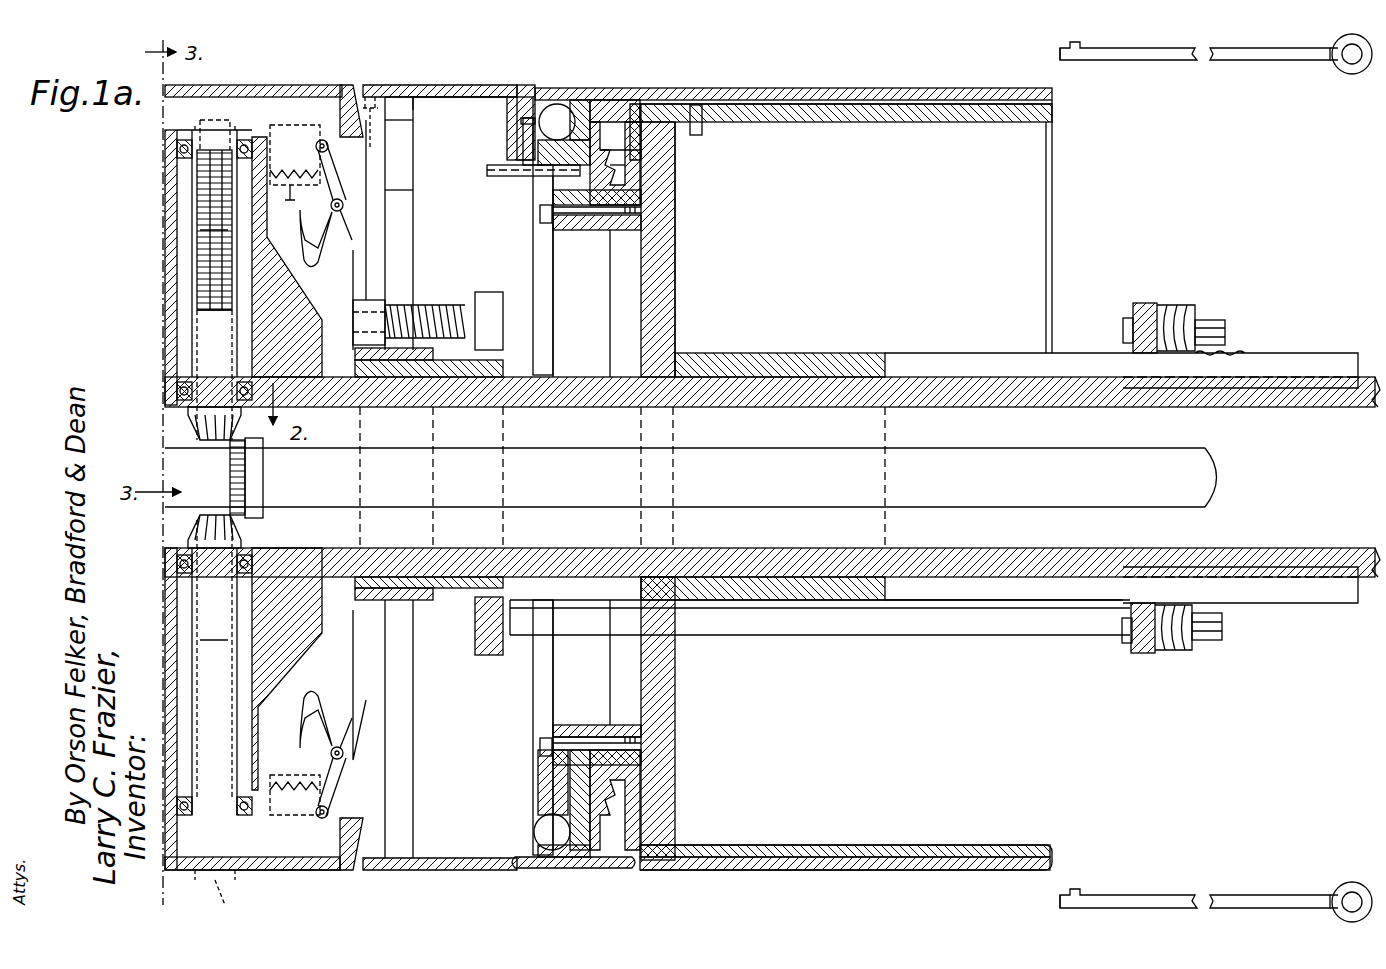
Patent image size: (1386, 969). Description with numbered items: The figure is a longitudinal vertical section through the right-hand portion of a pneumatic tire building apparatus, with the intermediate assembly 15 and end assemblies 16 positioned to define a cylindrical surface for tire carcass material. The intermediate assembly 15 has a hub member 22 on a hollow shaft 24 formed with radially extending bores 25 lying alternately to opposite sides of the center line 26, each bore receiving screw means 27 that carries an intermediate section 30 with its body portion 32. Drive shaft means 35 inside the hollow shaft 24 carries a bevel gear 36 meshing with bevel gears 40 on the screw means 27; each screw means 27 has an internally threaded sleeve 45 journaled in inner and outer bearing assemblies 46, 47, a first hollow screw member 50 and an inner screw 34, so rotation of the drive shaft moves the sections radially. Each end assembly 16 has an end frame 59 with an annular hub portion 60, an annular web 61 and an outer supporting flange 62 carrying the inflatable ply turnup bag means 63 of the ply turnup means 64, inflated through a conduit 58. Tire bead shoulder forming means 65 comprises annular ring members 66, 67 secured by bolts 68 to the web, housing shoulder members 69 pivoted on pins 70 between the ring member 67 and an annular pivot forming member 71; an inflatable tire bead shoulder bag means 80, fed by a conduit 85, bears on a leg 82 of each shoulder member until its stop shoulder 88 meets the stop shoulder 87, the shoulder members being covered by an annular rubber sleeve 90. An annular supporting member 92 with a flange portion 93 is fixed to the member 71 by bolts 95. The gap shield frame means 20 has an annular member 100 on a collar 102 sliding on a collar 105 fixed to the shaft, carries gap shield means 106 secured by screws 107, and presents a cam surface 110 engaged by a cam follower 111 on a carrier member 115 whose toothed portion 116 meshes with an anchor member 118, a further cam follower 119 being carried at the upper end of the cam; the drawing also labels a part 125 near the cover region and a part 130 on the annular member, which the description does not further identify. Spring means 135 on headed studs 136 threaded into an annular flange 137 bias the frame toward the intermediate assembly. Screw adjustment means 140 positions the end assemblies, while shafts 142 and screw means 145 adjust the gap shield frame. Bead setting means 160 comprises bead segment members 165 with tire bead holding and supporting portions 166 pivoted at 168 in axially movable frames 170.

The intermediate assembly 15 is at (162, 270).
The end assemblies 16 is at (530, 246).
The gap shield frame means 20 is at (393, 200).
The hub member 22 is at (290, 300).
The hollow shaft 24 is at (575, 377).
The radially extending bores 25 is at (178, 338).
The center line 26 is at (196, 198).
The screw means 27 is at (190, 305).
The intermediate sections 30 is at (178, 122).
The body portion 32 is at (245, 110).
The inner screw 34 is at (195, 210).
The drive shaft means 35 is at (730, 448).
The bevel gear 36 is at (245, 478).
The bevel gears 40 is at (210, 515).
The internally threaded sleeve 45 is at (198, 240).
The inner bearing assembly 46 is at (178, 390).
The outer bearing assembly 47 is at (178, 152).
The first hollow screw member 50 is at (200, 222).
The conduit 58 is at (702, 137).
The end frames 59 is at (680, 258).
The annular hub portion 60 is at (822, 353).
The annular web 61 is at (665, 313).
The outer supporting flange 62 is at (818, 122).
The inflatable ply turnup bag means 63 is at (905, 122).
The ply turnup means 64 is at (955, 86).
The tire bead shoulder forming means 65 is at (530, 188).
The annular ring member 66 is at (640, 193).
The annular ring member 67 is at (585, 230).
The bolts 68 is at (645, 212).
The shoulder members 69 is at (605, 122).
The pins 70 is at (560, 112).
The annular pivot forming member 71 is at (522, 148).
The inflatable tire bead shoulder bag means 80 is at (531, 479).
The leg 82 is at (645, 158).
The conduit 85 is at (487, 170).
The stop shoulder 87 is at (645, 104).
The stop shoulder 88 is at (640, 174).
The annular rubber sleeve 90 is at (588, 100).
The annular supporting member 92 is at (525, 85).
The flange portion 93 is at (460, 111).
The bolts 95 is at (507, 140).
The annular member 100 is at (386, 200).
The collar 102 is at (415, 365).
The collar 105 is at (485, 370).
The gap shield means 106 is at (405, 90).
The screws 107 is at (380, 85).
The cam surface 110 is at (355, 242).
The cam follower 111 is at (344, 205).
The carrier member 115 is at (318, 248).
The toothed portion 116 is at (325, 170).
The anchor member 118 is at (280, 118).
The cam follower 119 is at (330, 150).
The cover 125 is at (250, 120).
The plate 130 is at (385, 130).
The spring means 135 is at (440, 296).
The headed studs 136 is at (360, 300).
The annular flange 137 is at (503, 300).
The screw adjustment means 140 is at (1178, 300).
The shafts 142 is at (962, 635).
The screw means 145 is at (1180, 652).
The bead setting means 160 is at (1250, 62).
The bead segment members 165 is at (1150, 60).
The tire bead holding and supporting portions 166 is at (1065, 62).
The pivot 168 is at (1348, 78).
The frames 170 is at (1318, 60).